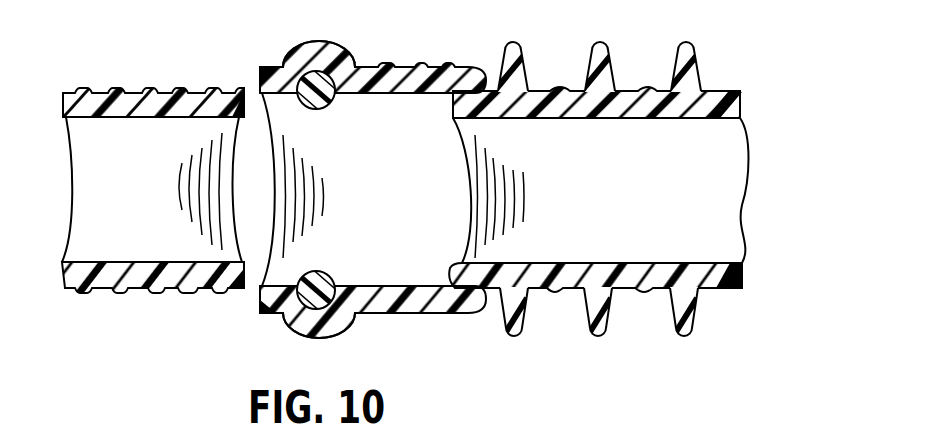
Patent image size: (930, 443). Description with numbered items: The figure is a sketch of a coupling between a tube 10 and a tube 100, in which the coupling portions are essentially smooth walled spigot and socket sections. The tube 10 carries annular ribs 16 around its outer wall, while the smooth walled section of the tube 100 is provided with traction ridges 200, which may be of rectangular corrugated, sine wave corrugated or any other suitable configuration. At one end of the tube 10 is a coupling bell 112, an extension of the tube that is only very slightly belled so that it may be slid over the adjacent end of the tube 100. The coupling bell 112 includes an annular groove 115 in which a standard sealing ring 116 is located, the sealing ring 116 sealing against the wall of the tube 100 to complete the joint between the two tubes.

The tube 10 is at (598, 200).
The ribs 16 is at (701, 72).
The tube 100 is at (143, 156).
The traction ridges 200 is at (143, 97).
The coupling bell 112 is at (352, 191).
The annular groove 115 is at (290, 75).
The sealing ring 116 is at (326, 106).